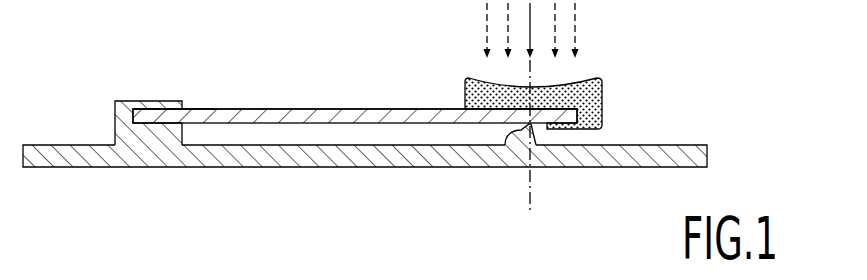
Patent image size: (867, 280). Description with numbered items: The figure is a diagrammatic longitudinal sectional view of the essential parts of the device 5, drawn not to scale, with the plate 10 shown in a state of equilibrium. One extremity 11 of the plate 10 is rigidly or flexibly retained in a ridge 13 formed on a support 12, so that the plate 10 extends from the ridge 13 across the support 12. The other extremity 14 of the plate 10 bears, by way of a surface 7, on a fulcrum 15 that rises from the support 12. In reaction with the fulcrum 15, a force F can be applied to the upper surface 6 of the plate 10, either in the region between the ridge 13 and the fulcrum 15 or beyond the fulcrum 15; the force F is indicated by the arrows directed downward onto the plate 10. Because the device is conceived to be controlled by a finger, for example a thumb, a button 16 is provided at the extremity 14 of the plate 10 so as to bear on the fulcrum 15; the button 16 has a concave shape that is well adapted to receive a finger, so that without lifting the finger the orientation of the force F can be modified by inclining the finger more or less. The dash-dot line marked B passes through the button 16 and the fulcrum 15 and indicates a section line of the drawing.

The device 5 is at (67, 208).
The surface of the plate 6 is at (353, 109).
The surface 7 is at (280, 126).
The plate 10 is at (310, 109).
The extremity of the plate 11 is at (196, 104).
The support 12 is at (685, 168).
The ridge 13 is at (115, 117).
The extremity of the plate 14 is at (457, 102).
The fulcrum 15 is at (505, 146).
The button 16 is at (603, 102).
The force F is at (542, 30).
The section line B is at (542, 136).